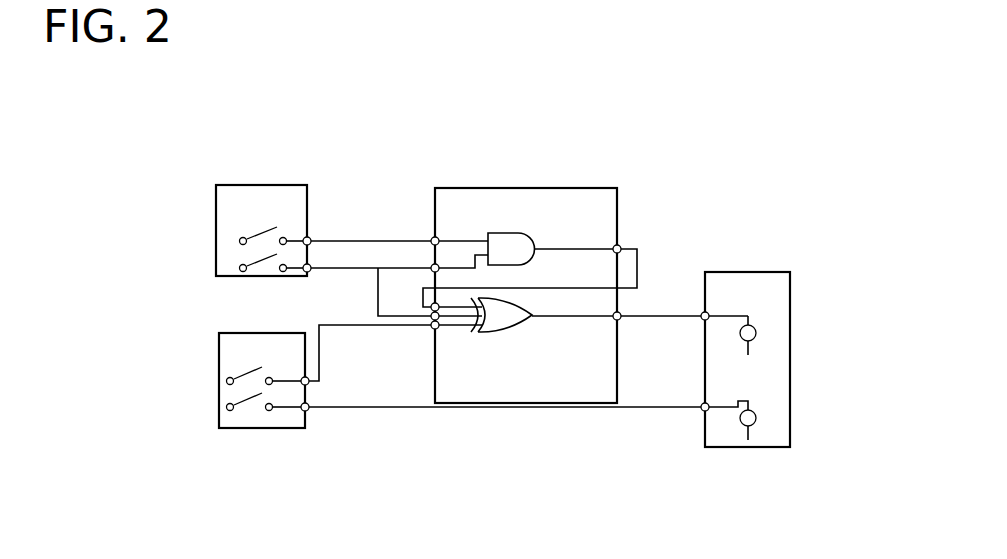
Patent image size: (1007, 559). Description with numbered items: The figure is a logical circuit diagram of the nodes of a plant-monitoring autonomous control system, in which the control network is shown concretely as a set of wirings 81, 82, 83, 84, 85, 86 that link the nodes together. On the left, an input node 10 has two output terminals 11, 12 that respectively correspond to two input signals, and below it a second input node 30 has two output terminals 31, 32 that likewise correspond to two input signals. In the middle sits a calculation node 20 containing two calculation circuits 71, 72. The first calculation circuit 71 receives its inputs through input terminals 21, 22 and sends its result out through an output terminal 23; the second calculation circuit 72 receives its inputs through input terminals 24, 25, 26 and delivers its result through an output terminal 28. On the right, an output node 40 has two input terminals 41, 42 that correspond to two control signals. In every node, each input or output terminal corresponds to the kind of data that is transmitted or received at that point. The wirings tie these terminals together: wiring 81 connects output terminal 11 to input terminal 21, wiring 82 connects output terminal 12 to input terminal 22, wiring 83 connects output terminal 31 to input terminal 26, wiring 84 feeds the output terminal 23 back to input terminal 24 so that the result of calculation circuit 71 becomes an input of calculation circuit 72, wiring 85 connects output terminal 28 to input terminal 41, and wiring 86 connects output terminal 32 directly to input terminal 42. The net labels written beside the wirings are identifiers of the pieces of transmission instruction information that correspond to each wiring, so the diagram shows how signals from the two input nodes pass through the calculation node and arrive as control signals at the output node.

The input node 10 is at (278, 188).
The output terminal 11 is at (304, 240).
The output terminal 12 is at (304, 267).
The calculation node 20 is at (612, 190).
The input terminal 21 is at (434, 238).
The input terminal 22 is at (433, 265).
The output terminal 23 is at (622, 249).
The input terminal 24 is at (434, 318).
The input terminal 25 is at (437, 305).
The input terminal 26 is at (436, 328).
The output terminal 28 is at (616, 319).
The input node 30 is at (262, 429).
The output terminal 31 is at (302, 383).
The output terminal 32 is at (302, 408).
The output node 40 is at (792, 283).
The input terminal 41 is at (706, 313).
The input terminal 42 is at (706, 411).
The calculation circuit 71 is at (513, 233).
The calculation circuit 72 is at (497, 325).
The wiring 81 is at (324, 241).
The wiring 82 is at (352, 268).
The wiring 83 is at (318, 346).
The wiring 84 is at (588, 287).
The wiring 85 is at (733, 314).
The wiring 86 is at (688, 409).